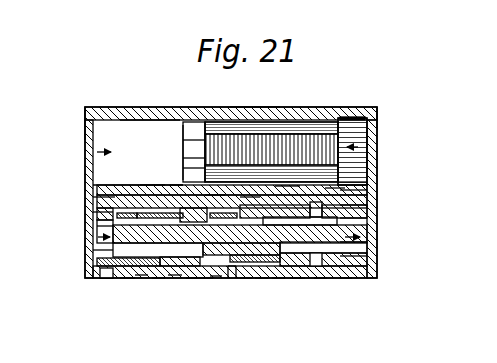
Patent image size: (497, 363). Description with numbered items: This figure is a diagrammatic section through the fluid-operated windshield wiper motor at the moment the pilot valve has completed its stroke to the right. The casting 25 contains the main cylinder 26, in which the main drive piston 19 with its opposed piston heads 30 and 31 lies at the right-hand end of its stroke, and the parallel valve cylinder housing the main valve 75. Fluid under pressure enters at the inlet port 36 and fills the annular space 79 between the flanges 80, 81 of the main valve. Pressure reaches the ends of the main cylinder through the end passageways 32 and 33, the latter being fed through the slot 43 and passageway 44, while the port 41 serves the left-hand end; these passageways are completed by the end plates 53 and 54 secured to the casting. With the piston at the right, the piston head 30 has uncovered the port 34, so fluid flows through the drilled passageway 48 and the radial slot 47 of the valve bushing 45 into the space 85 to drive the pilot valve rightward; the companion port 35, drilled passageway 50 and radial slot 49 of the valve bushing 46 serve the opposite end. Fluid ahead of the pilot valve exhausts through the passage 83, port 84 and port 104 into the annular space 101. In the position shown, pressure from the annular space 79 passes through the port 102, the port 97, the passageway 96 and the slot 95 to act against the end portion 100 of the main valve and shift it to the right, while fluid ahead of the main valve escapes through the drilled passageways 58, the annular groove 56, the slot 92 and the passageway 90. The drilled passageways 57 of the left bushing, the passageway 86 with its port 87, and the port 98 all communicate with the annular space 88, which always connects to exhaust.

The main drive piston 19 is at (278, 134).
The casting 25 is at (247, 107).
The main cylinder 26 is at (147, 125).
The piston head 30 is at (196, 120).
The piston head 31 is at (350, 122).
The end passageway 32 is at (85, 158).
The end passageway 33 is at (370, 157).
The port 34 is at (178, 186).
The port 35 is at (285, 186).
The inlet port 36 is at (232, 272).
The port 41 is at (215, 194).
The slot 43 is at (248, 197).
The passageway 44 is at (370, 178).
The valve bushing 45 is at (103, 278).
The valve bushing 46 is at (375, 256).
The radial slot 47 is at (90, 212).
The drilled passageway 48 is at (93, 197).
The radial slot 49 is at (372, 192).
The drilled passageway 50 is at (336, 188).
The end plate 53 is at (85, 125).
The end plate 54 is at (377, 112).
The annular groove 56 is at (345, 278).
The drilled passageways 57 is at (128, 278).
The drilled passageways 58 is at (320, 278).
The main valve 75 is at (150, 185).
The annular space 79 is at (245, 278).
The flange 80 is at (207, 278).
The flange 81 is at (260, 278).
The passage 83 is at (370, 240).
The port 84 is at (298, 278).
The space 85 is at (95, 250).
The passageway 86 is at (175, 275).
The port 87 is at (158, 278).
The annular space 88 is at (193, 278).
The passageway 90 is at (373, 218).
The slot 92 is at (372, 207).
The slot 95 is at (100, 226).
The passageway 96 is at (98, 240).
The port 97 is at (216, 276).
The port 98 is at (183, 160).
The end portion 100 is at (140, 275).
The annular space 101 is at (278, 278).
The port 102 is at (271, 125).
The port 104 is at (297, 278).